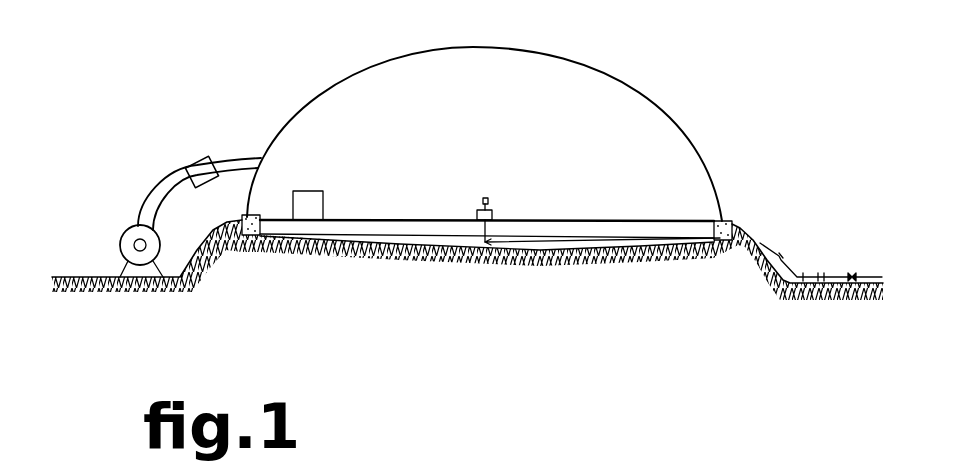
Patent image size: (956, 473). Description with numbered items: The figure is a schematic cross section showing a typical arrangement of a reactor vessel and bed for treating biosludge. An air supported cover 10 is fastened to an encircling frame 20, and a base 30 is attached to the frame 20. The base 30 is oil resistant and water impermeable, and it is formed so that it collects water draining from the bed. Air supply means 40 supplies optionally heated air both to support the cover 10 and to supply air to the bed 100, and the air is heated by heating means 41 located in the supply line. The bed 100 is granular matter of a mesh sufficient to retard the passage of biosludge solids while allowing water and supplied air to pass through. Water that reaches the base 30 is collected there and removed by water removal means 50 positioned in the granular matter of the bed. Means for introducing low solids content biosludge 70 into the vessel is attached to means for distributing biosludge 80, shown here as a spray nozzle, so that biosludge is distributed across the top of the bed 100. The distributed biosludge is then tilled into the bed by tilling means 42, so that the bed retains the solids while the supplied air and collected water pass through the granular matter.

The air supported cover 10 is at (653, 100).
The encircling frame 20 is at (731, 221).
The base 30 is at (362, 258).
The air supply means 40 is at (172, 180).
The heating means 41 is at (196, 160).
The tilling means 42 is at (310, 191).
The water removal means 50 is at (450, 267).
The means for introducing low solids content biosludge 70 is at (792, 270).
The means for distributing biosludge 80 is at (483, 199).
The bed 100 is at (540, 234).